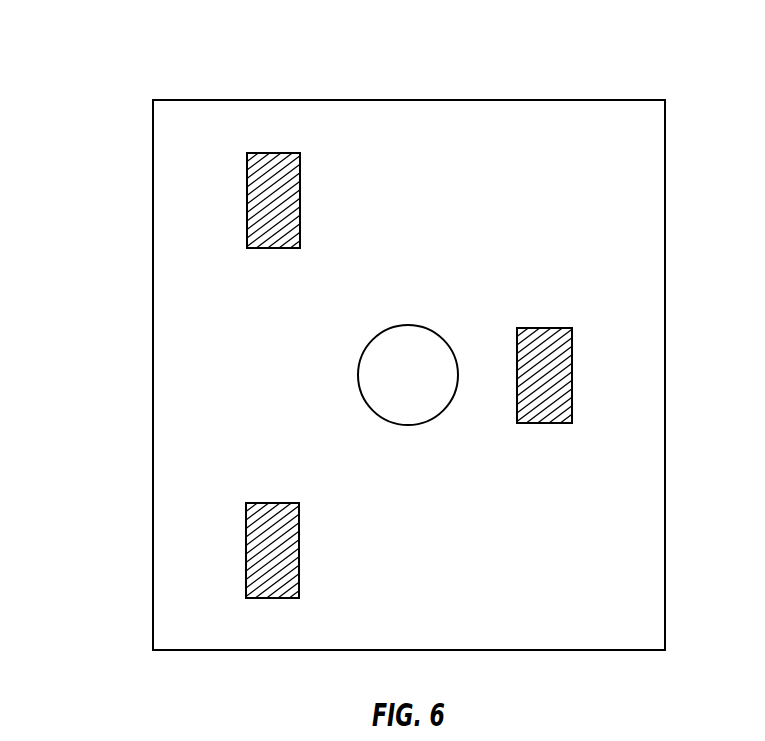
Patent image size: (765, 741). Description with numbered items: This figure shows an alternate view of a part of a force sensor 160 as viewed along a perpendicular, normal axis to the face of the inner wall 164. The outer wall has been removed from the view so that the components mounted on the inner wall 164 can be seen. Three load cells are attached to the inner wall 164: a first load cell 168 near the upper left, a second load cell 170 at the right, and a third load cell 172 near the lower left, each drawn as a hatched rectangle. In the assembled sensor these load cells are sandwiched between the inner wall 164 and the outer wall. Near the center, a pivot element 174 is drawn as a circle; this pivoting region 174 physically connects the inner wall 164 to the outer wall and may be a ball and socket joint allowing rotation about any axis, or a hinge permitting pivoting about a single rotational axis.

The force sensor 160 is at (157, 40).
The inner wall 164 is at (607, 100).
The first load cell 168 is at (302, 200).
The second load cell 170 is at (543, 328).
The third load cell 172 is at (300, 550).
The pivoting region 174 is at (420, 332).